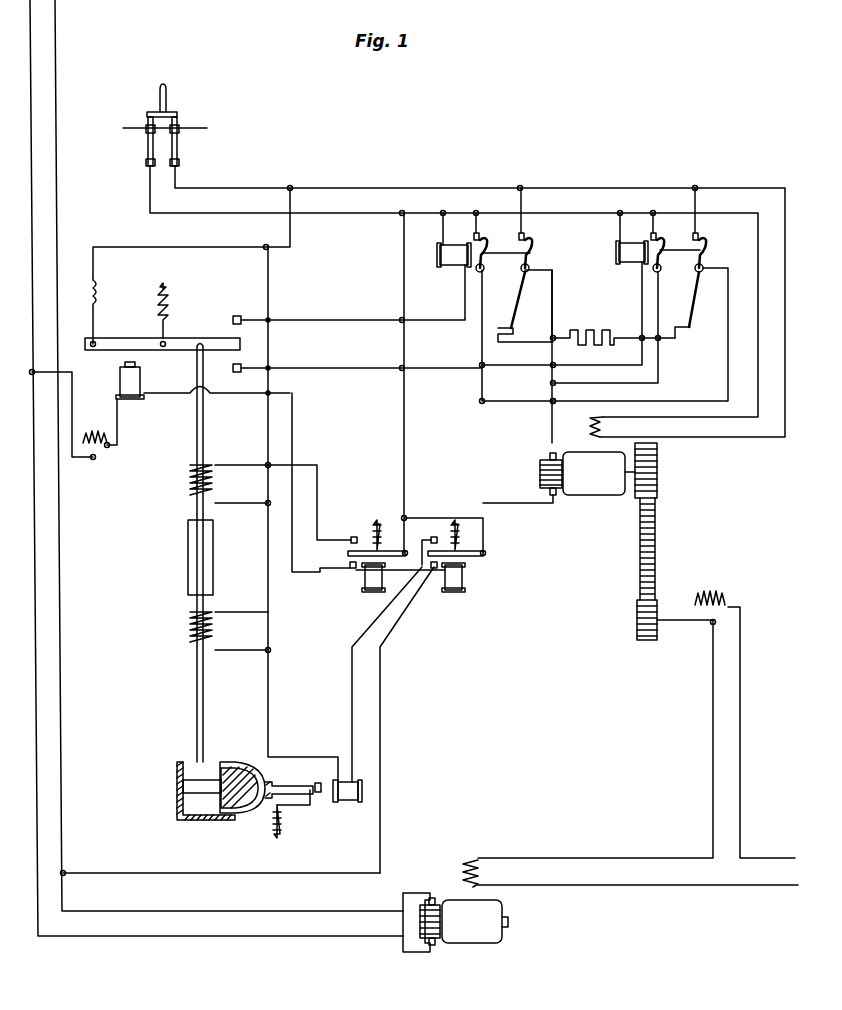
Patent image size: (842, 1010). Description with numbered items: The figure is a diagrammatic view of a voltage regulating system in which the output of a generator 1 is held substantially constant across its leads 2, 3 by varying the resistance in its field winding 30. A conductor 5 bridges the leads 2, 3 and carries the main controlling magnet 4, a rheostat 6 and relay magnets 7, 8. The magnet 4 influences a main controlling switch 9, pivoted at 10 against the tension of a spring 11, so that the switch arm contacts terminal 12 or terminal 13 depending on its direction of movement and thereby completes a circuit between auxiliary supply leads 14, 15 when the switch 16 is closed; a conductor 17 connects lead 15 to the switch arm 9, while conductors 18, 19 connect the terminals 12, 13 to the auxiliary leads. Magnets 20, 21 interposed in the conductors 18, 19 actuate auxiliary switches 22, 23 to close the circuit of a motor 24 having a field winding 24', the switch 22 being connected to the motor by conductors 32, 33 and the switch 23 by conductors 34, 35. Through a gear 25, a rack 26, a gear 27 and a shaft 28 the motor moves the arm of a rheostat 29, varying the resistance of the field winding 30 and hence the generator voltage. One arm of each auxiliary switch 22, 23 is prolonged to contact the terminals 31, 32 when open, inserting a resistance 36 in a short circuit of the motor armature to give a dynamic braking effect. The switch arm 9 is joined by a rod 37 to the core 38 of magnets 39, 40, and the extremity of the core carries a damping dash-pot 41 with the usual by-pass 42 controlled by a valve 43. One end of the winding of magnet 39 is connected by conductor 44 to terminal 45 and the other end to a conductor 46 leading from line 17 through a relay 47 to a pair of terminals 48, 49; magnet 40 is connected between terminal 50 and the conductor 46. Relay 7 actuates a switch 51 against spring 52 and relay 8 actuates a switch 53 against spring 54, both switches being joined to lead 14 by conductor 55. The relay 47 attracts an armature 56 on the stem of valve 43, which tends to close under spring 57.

The generator 1 is at (455, 922).
The generator lead 2 is at (26, 548).
The generator lead 3 is at (60, 580).
The main controlling magnet 4 is at (141, 376).
The conductor 5 is at (72, 396).
The rheostat 6 is at (96, 430).
The relay magnet 7 is at (370, 587).
The relay magnet 8 is at (462, 575).
The main controlling switch 9 is at (110, 338).
The pivot 10 is at (92, 343).
The spring 11 is at (166, 312).
The terminal 12 is at (238, 315).
The terminal 13 is at (232, 367).
The auxiliary supply lead 14 is at (133, 128).
The auxiliary supply lead 15 is at (178, 128).
The switch 16 is at (146, 150).
The conductor 17 is at (186, 248).
The conductor 18 is at (335, 320).
The conductor 19 is at (315, 368).
The magnet 20 is at (452, 258).
The magnet 21 is at (634, 258).
The auxiliary switch 22 is at (530, 253).
The auxiliary switch 23 is at (706, 268).
The motor 24 is at (559, 477).
The field winding 24' is at (579, 425).
The gear 25 is at (658, 468).
The rack 26 is at (655, 533).
The gear 27 is at (637, 624).
The shaft 28 is at (685, 640).
The rheostat 29 is at (718, 595).
The field winding 30 is at (472, 858).
The terminal 31 is at (508, 328).
The conductor 32 is at (478, 388).
The conductor 33 is at (545, 366).
The conductor 34 is at (655, 360).
The conductor 35 is at (727, 384).
The resistance 36 is at (588, 333).
The rod 37 is at (204, 411).
The core 38 is at (188, 552).
The magnet 39 is at (188, 482).
The magnet 40 is at (188, 636).
The dash-pot 41 is at (177, 787).
The by-pass 42 is at (240, 762).
The valve 43 is at (262, 800).
The conductor 44 is at (255, 465).
The terminal 45 is at (352, 537).
The conductor 46 is at (268, 528).
The relay 47 is at (352, 800).
The terminal 48 is at (433, 569).
The terminal 49 is at (434, 537).
The terminal 50 is at (351, 568).
The switch 51 is at (382, 552).
The spring 52 is at (376, 520).
The switch 53 is at (470, 557).
The spring 54 is at (462, 532).
The conductor 55 is at (406, 412).
The armature 56 is at (316, 783).
The spring 57 is at (282, 823).